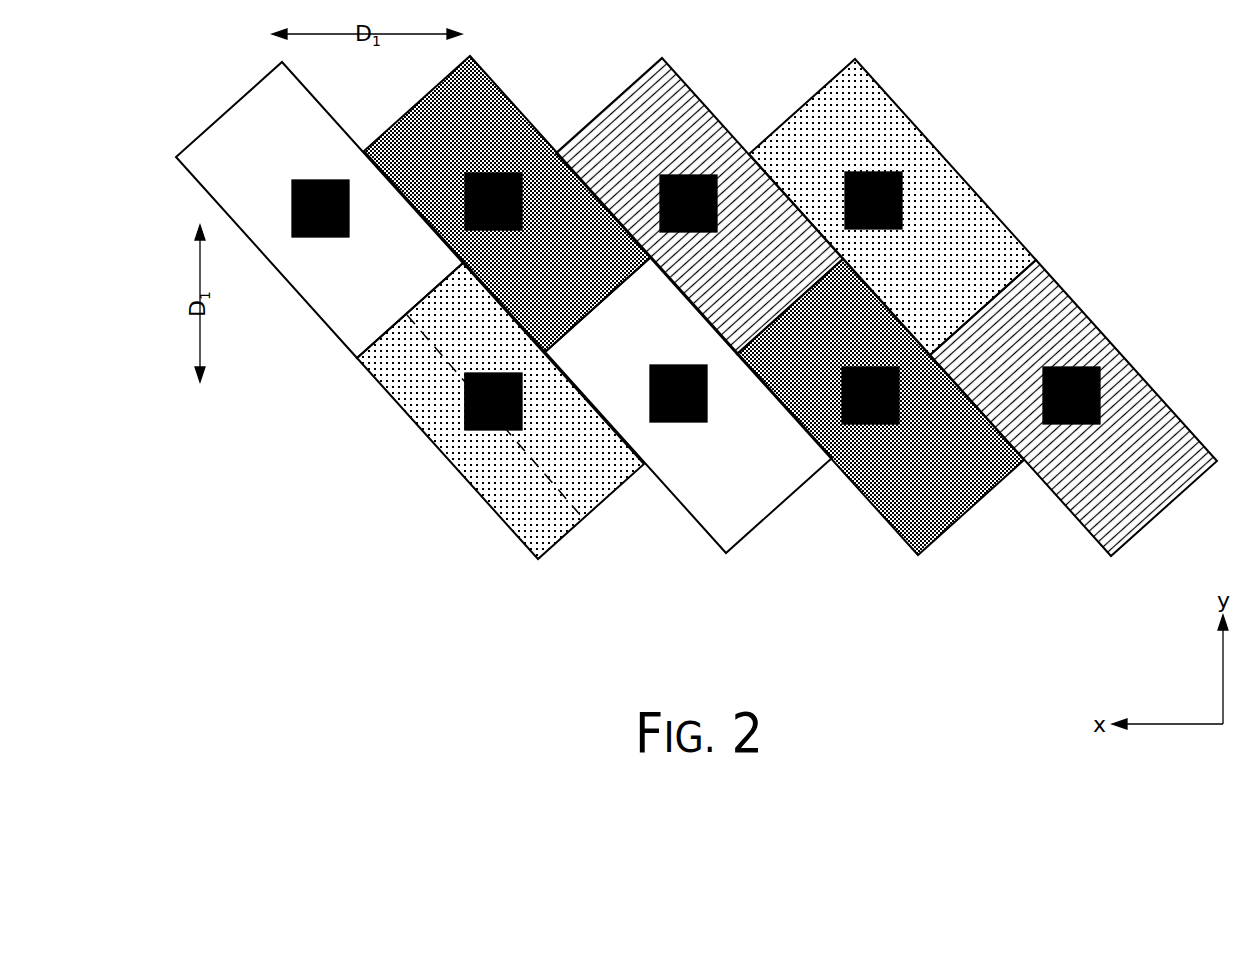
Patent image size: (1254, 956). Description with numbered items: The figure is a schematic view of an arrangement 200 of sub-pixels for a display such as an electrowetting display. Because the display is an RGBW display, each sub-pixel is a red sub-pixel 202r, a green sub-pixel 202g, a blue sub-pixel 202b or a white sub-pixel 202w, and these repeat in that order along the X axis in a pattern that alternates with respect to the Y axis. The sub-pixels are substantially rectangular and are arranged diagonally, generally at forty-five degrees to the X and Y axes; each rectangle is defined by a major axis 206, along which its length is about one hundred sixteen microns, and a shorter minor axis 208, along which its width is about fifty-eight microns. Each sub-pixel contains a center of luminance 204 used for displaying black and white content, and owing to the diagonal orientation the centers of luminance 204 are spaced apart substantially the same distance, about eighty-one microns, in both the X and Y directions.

The arrangement of sub-pixels 200 is at (1030, 53).
The white sub-pixel 202w is at (298, 154).
The red sub-pixel 202r is at (483, 147).
The green sub-pixel 202g is at (668, 146).
The blue sub-pixel 202b is at (857, 146).
The center of luminance 204 is at (320, 237).
The major axis 206 is at (432, 345).
The minor axis 208 is at (457, 440).